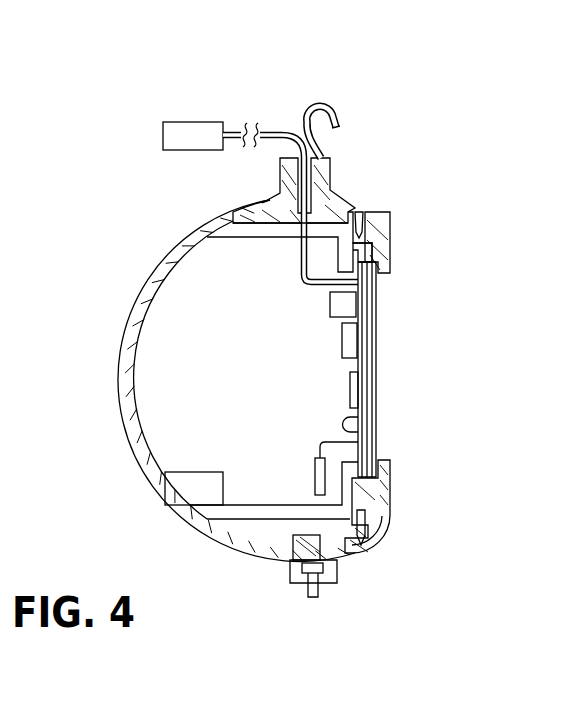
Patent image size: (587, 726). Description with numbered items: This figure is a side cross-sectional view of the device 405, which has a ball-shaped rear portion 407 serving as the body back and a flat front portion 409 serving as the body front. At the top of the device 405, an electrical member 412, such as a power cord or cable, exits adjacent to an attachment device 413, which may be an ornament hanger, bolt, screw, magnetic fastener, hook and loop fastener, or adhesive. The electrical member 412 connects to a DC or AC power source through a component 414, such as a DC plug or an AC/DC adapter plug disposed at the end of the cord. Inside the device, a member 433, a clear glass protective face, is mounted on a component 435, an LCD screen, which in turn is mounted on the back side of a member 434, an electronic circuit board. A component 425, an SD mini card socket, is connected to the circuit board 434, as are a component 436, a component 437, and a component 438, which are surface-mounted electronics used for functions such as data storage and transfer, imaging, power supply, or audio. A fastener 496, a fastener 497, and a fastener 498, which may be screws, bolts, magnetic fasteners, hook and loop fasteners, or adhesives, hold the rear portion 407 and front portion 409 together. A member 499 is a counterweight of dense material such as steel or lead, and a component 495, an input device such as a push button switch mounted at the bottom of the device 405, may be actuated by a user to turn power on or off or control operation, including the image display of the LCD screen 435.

The device 405 is at (132, 94).
The ball-shaped rear portion 407 is at (125, 403).
The flat front portion 409 is at (393, 213).
The electrical member 412 is at (264, 132).
The attachment device 413 is at (344, 119).
The component 414 is at (183, 152).
The component 425 is at (315, 474).
The member 433 is at (378, 303).
The member 434 is at (362, 366).
The component 435 is at (368, 330).
The component 436 is at (350, 390).
The component 437 is at (343, 342).
The component 438 is at (333, 305).
The component 495 is at (303, 592).
The fastener 496 is at (166, 494).
The fastener 497 is at (360, 545).
The fastener 498 is at (357, 212).
The member 499 is at (205, 472).